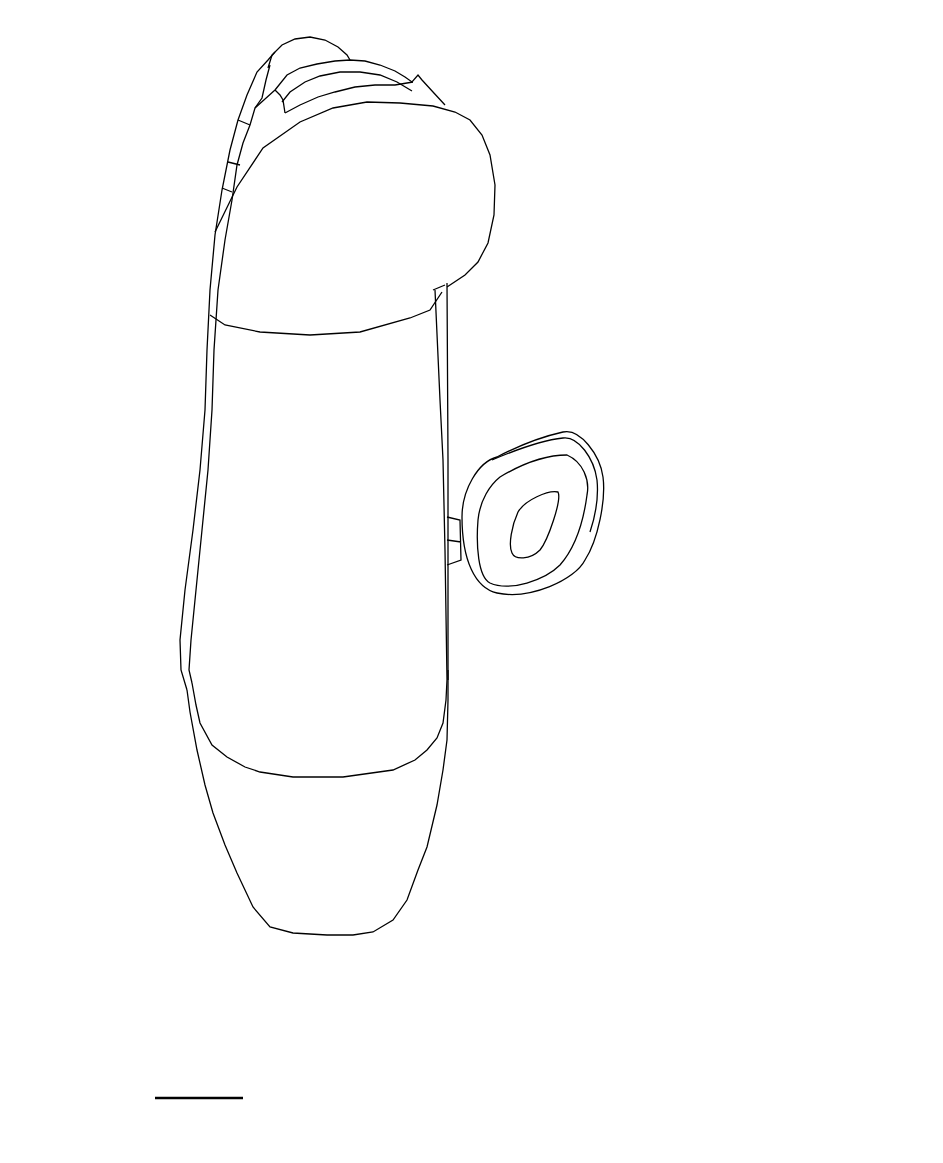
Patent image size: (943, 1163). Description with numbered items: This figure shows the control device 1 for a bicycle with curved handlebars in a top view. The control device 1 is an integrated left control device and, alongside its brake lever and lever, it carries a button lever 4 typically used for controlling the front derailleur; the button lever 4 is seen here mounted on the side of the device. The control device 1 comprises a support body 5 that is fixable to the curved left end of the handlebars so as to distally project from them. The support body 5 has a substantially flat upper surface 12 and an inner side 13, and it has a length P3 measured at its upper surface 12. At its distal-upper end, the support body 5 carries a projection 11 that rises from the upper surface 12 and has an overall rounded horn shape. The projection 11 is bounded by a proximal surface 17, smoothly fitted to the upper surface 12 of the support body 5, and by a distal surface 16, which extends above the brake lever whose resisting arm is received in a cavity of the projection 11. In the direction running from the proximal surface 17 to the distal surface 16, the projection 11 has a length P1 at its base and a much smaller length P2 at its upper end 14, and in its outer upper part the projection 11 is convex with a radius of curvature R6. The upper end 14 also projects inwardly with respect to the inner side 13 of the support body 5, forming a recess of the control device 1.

The control device 1 is at (700, 268).
The distal-upper projection 11 is at (525, 187).
The upper end 14 is at (442, 158).
The distal surface 16 is at (390, 100).
The proximal surface 17 is at (408, 292).
The support body 5 is at (495, 695).
The upper surface 12 is at (388, 463).
The inner side 13 is at (448, 650).
The button lever 4 is at (567, 487).
The radius of curvature R6 is at (268, 148).
The length at the base P1 is at (140, 329).
The length at the upper end P2 is at (100, 231).
The length of the support body P3 is at (140, 931).